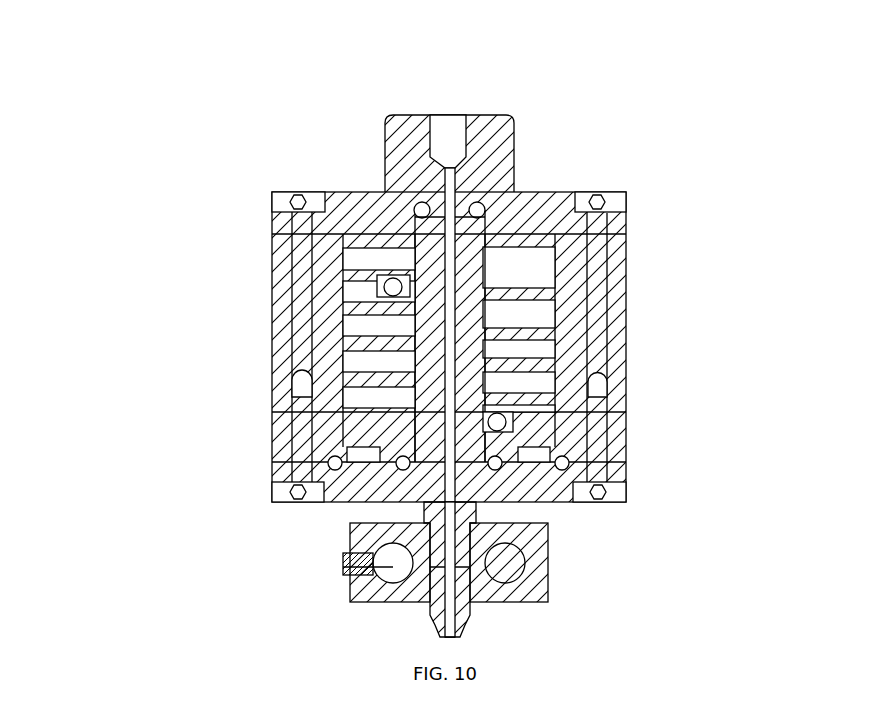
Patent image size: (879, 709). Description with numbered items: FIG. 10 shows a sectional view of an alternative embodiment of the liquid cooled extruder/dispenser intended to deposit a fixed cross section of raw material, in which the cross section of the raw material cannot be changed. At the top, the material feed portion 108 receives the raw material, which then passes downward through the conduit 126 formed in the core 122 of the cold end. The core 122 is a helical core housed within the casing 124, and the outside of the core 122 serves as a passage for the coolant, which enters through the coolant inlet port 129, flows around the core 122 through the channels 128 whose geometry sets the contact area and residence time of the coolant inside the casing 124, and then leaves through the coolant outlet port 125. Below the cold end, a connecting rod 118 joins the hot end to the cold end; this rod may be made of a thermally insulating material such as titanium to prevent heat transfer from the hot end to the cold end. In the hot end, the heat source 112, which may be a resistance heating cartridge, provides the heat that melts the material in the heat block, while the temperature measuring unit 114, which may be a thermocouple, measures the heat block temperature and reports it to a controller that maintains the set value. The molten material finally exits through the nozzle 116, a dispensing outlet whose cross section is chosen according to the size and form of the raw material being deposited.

The material feed portion 108 is at (455, 122).
The casing 124 is at (626, 258).
The conduit 126 is at (440, 246).
The coolant outlet port 125 is at (393, 287).
The channels 128 is at (357, 363).
The core 122 is at (478, 307).
The coolant inlet port 129 is at (517, 422).
The connecting rod 118 is at (462, 518).
The heat source 112 is at (517, 557).
The temperature measuring unit 114 is at (377, 560).
The nozzle 116 is at (418, 615).